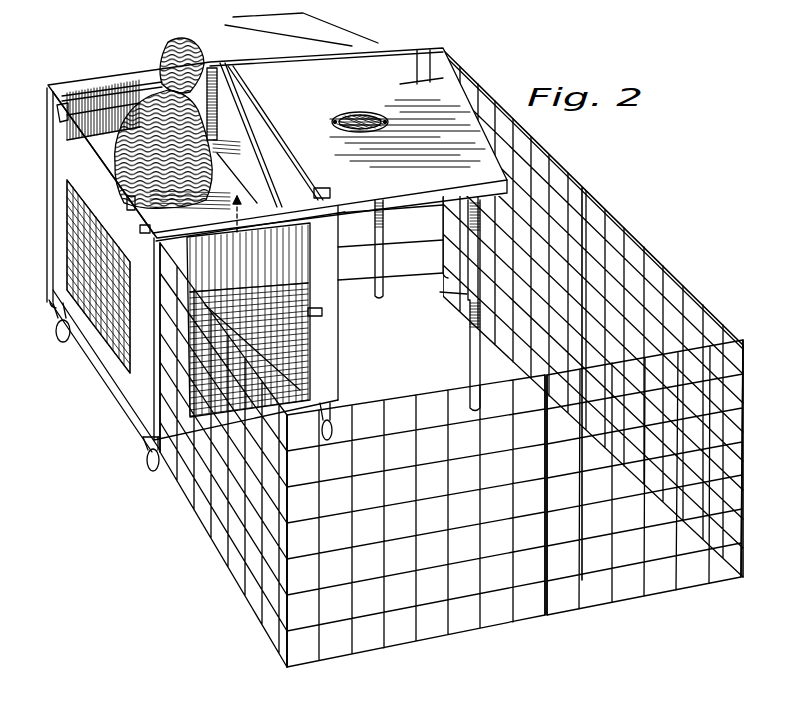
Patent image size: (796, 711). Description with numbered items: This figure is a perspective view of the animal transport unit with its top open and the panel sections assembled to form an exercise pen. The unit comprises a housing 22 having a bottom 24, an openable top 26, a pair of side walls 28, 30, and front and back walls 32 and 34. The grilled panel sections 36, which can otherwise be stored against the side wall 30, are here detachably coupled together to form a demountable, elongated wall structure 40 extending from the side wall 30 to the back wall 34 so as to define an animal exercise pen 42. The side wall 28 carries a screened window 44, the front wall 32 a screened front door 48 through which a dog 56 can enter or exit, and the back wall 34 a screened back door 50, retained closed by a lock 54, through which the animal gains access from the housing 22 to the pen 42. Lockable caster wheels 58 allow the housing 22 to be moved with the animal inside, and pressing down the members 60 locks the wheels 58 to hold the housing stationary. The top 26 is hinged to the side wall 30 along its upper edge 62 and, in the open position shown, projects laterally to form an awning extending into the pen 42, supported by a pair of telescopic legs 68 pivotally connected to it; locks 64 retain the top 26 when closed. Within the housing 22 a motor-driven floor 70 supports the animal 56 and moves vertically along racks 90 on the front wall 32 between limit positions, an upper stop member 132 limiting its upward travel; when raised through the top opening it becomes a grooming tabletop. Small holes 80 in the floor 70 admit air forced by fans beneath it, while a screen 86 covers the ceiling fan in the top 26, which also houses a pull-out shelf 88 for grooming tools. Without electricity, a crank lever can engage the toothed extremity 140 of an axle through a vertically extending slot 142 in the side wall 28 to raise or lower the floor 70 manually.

The housing 22 is at (46, 96).
The bottom 24 is at (118, 392).
The openable top 26 is at (384, 60).
The side wall 28 is at (140, 404).
The side wall 30 is at (298, 190).
The front wall 32 is at (127, 83).
The back wall 34 is at (327, 367).
The grilled panel sections 36 is at (200, 512).
The elongated wall structure 40 is at (593, 315).
The animal exercise pen 42 is at (655, 300).
The screened window 44 is at (142, 378).
The screened front door 48 is at (137, 96).
The screened back door 50 is at (312, 336).
The lock 54 is at (320, 312).
The dog 56 is at (178, 46).
The lockable caster wheels 58 is at (98, 330).
The locking members 60 is at (49, 325).
The upper edge 62 is at (290, 148).
The locks 64 is at (63, 107).
The telescopic legs 68 is at (476, 298).
The motor-driven floor 70 is at (227, 153).
The small holes 80 is at (225, 212).
The screen 86 is at (354, 113).
The pull-out shelf 88 is at (313, 40).
The racks 90 is at (217, 90).
The upper stop members 132 is at (63, 87).
The toothed extremity 140 is at (50, 168).
The vertically extending slot 142 is at (48, 242).